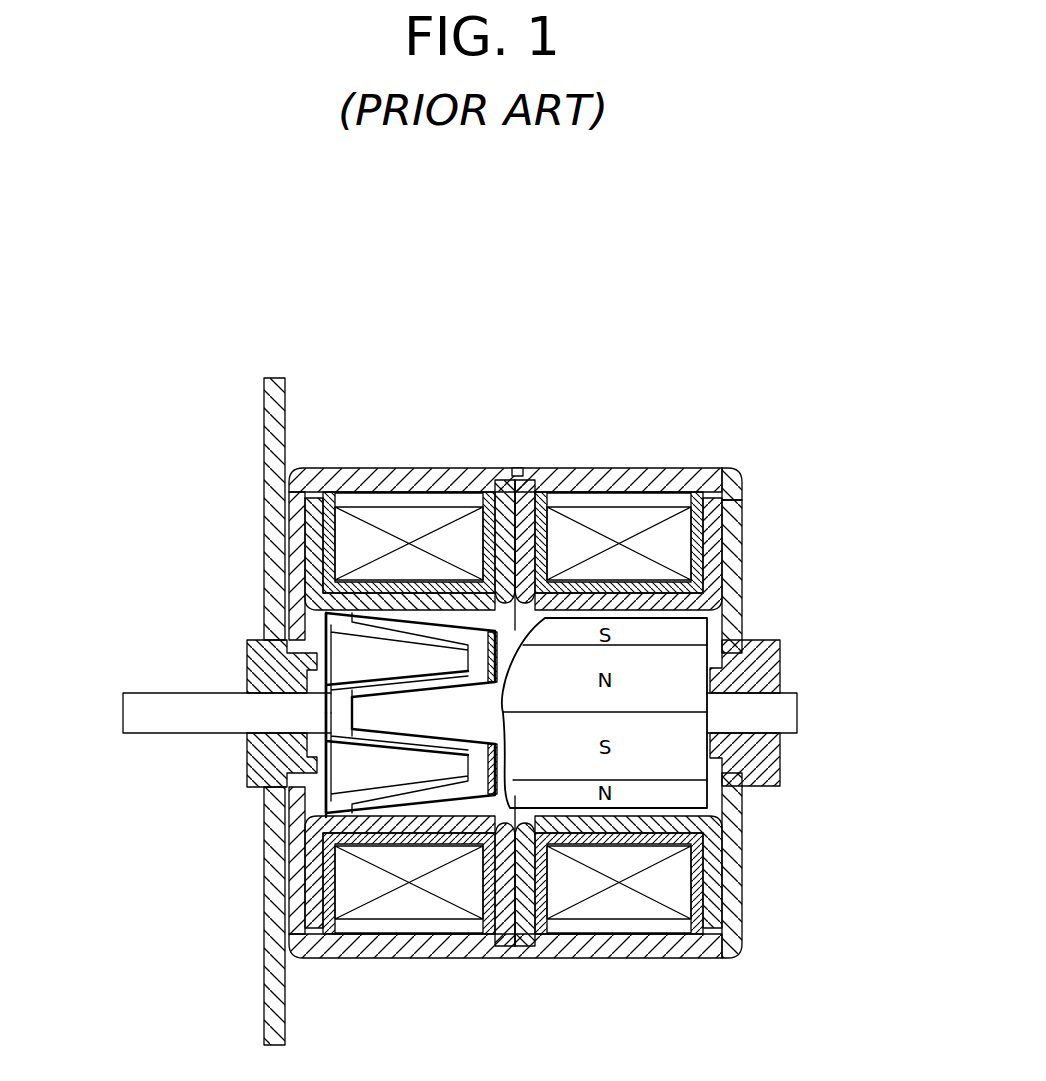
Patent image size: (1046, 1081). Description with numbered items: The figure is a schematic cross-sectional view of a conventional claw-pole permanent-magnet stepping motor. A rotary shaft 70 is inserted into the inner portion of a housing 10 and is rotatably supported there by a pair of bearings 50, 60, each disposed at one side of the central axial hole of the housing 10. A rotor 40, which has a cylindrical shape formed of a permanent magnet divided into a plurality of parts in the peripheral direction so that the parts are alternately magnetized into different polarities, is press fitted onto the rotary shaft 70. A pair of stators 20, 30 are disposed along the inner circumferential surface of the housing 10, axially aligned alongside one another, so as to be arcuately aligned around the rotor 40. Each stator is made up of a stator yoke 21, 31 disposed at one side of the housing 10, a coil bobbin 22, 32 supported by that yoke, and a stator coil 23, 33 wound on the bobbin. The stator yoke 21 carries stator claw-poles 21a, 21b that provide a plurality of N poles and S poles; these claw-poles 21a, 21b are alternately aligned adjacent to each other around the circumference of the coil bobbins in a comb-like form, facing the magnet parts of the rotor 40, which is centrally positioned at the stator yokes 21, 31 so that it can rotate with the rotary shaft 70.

The housing 10 is at (742, 517).
The stator 20 is at (410, 631).
The stator yoke 21 is at (313, 498).
The stator claw-pole 21a is at (355, 775).
The stator claw-pole 21b is at (365, 713).
The coil bobbin 22 is at (328, 494).
The stator coil 23 is at (338, 383).
The stator 30 is at (621, 630).
The stator yoke 31 is at (712, 500).
The coil bobbin 32 is at (697, 500).
The stator coil 33 is at (702, 380).
The rotor 40 is at (742, 623).
The bearing 50 is at (783, 767).
The bearing 60 is at (247, 658).
The rotary shaft 70 is at (787, 715).